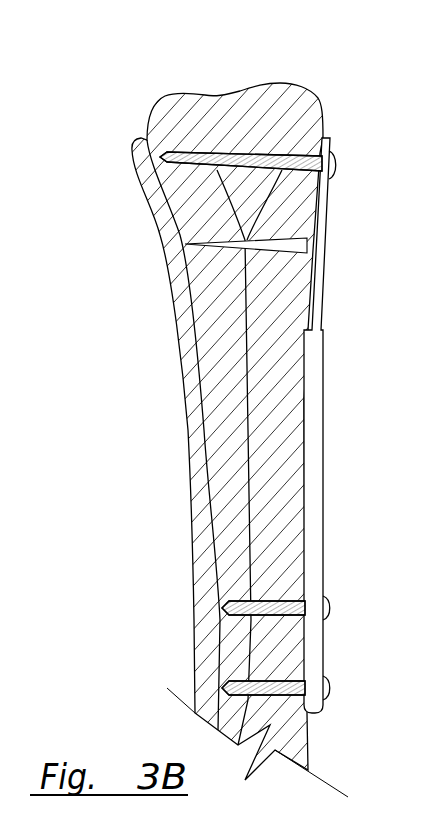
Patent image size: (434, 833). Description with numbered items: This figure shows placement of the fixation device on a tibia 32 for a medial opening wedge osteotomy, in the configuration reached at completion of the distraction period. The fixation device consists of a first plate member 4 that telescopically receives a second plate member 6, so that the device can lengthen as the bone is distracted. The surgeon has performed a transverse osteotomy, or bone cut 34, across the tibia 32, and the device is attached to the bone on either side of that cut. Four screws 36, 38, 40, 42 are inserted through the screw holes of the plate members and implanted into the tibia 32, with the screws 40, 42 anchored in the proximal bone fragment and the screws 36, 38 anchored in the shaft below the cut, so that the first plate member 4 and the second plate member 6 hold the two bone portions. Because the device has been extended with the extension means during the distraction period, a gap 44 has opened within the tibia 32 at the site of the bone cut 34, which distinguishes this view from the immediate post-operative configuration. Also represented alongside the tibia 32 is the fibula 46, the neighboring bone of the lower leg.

The first plate member 4 is at (253, 372).
The second plate member 6 is at (320, 233).
The tibia 32 is at (286, 95).
The bone cut 34 is at (227, 235).
The screw 36 is at (235, 673).
The screw 38 is at (235, 598).
The screw 40 is at (205, 105).
The screw 42 is at (207, 153).
The gap 44 is at (245, 275).
The fibula 46 is at (205, 483).